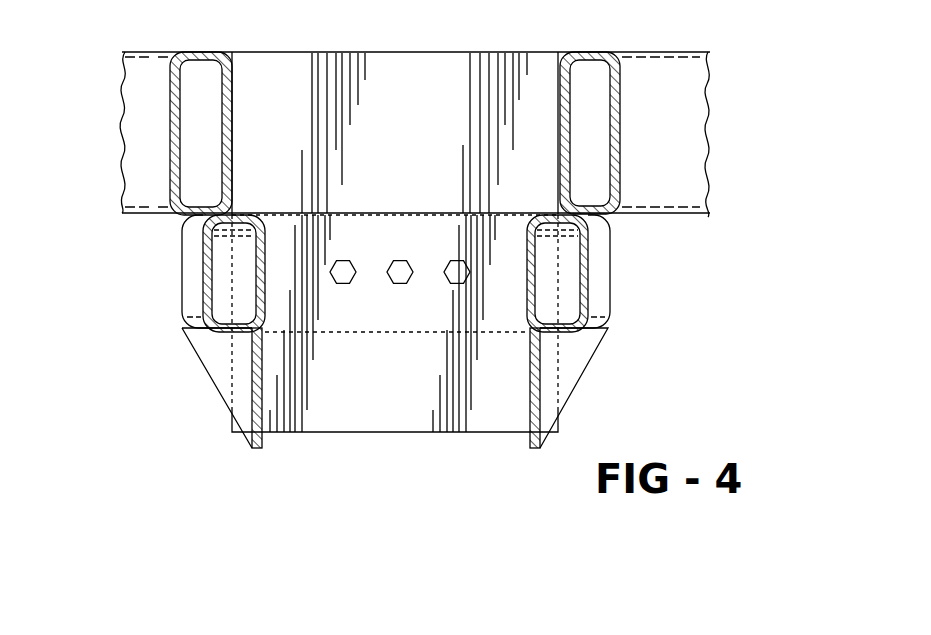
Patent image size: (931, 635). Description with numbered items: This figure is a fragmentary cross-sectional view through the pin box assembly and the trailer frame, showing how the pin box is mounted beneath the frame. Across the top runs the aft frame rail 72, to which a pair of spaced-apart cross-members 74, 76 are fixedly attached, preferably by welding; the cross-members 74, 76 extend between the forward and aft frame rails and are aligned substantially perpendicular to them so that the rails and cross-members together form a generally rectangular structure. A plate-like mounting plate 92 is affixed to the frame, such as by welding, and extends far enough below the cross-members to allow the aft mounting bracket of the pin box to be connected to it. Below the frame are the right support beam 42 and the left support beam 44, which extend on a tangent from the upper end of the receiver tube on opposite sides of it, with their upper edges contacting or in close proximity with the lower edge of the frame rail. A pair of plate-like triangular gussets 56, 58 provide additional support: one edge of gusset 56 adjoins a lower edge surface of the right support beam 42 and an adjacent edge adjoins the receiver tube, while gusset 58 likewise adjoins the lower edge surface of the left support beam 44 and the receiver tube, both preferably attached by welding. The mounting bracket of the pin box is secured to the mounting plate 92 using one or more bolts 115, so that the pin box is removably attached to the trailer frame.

The aft frame rail 72 is at (660, 50).
The frame cross-member 74 is at (168, 110).
The frame cross-member 76 is at (620, 135).
The mounting plate 92 is at (420, 157).
The right support beam 42 is at (193, 250).
The left support beam 44 is at (602, 278).
The gusset 56 is at (213, 360).
The gusset 58 is at (574, 360).
The bolts 115 is at (412, 300).